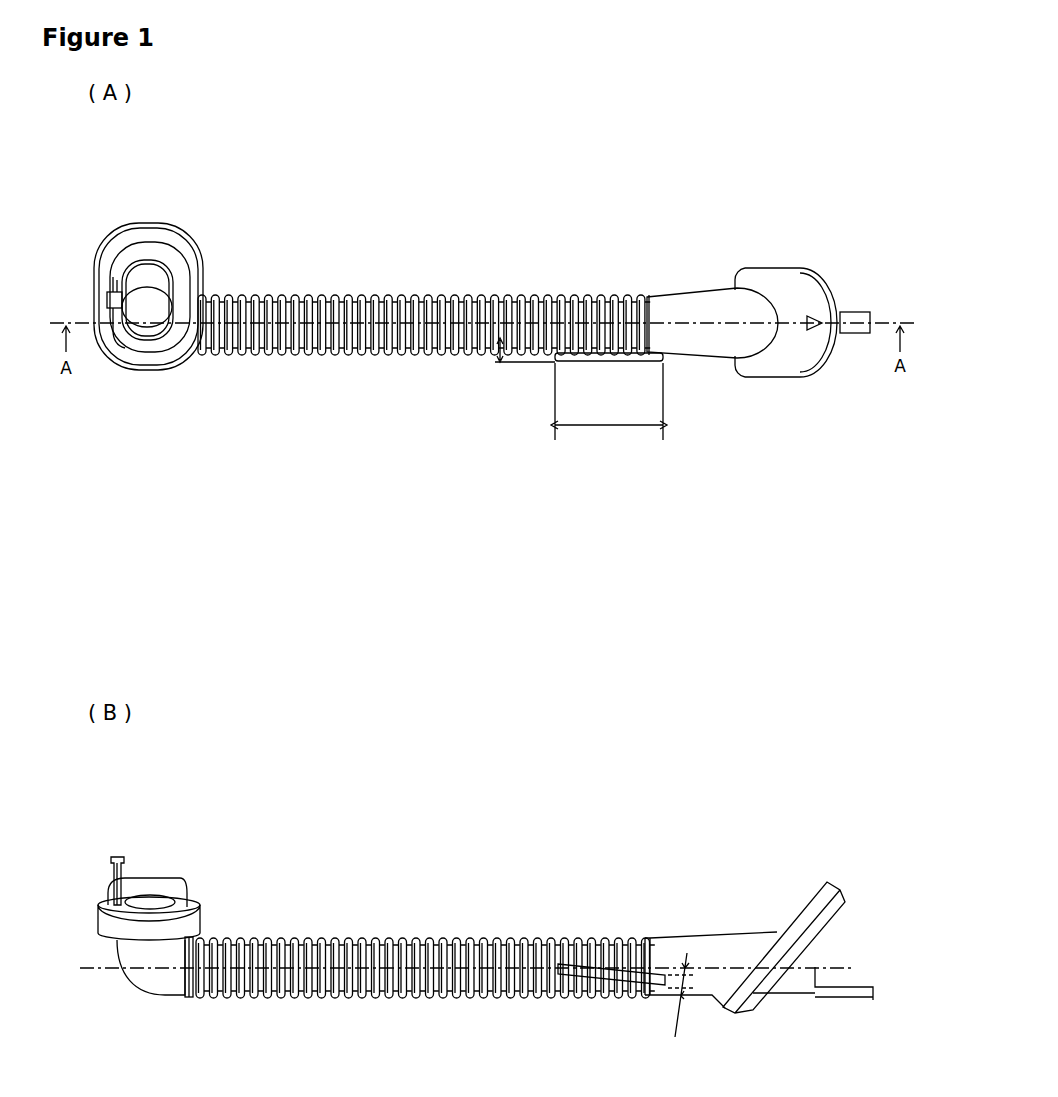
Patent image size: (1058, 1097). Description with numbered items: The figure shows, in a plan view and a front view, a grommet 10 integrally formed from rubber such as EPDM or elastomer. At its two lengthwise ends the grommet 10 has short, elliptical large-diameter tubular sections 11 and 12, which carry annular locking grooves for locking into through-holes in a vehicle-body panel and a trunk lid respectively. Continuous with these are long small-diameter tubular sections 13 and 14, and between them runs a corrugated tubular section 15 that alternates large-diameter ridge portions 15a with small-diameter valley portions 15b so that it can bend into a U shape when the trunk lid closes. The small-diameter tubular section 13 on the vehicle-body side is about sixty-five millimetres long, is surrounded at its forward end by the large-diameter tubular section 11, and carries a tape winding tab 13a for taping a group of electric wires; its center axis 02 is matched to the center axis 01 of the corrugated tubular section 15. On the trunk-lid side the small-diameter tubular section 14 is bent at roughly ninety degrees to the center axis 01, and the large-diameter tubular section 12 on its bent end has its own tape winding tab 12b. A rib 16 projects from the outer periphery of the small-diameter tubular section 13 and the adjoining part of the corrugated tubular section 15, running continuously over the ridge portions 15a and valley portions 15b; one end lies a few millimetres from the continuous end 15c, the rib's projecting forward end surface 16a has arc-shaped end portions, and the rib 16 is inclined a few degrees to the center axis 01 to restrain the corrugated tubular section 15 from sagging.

The grommet 10 is at (211, 126).
The large-diameter tubular section 11 is at (778, 268).
The large-diameter tubular section 12 is at (177, 237).
The tape winding tab 12b is at (104, 350).
The small-diameter tubular section 13 is at (760, 646).
The tape winding tab 13a is at (848, 335).
The small-diameter tubular section 14 is at (153, 978).
The corrugated tubular section 15 is at (425, 610).
The ridge portion 15a is at (425, 610).
The valley portion 15b is at (425, 610).
The continuous end 15c is at (645, 293).
The rib 16 is at (613, 704).
The projecting forward end surface 16a is at (647, 362).
The center axis 01 is at (880, 315).
The center axis 02 is at (485, 614).